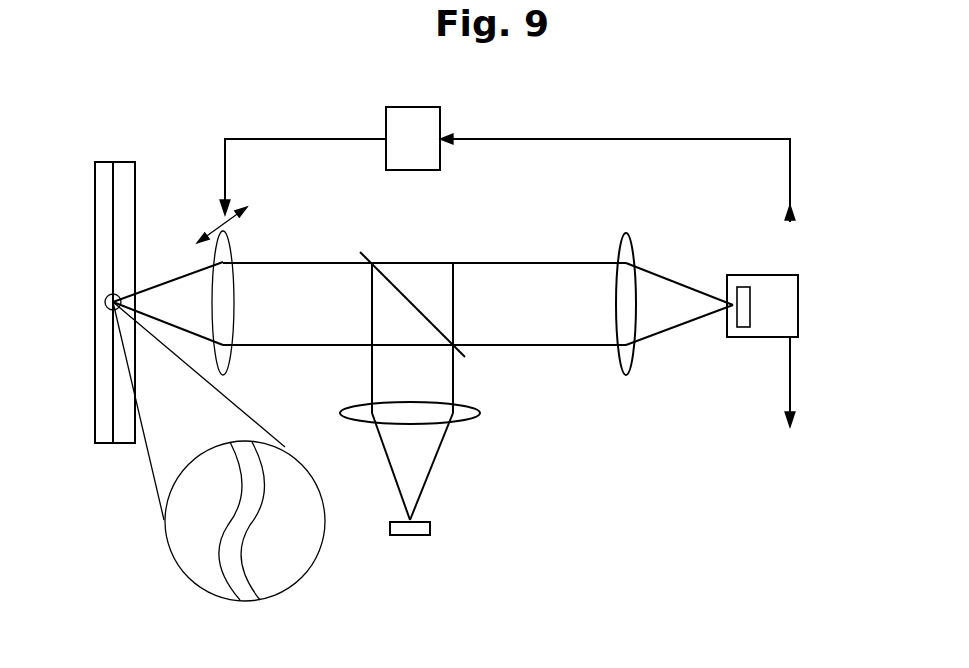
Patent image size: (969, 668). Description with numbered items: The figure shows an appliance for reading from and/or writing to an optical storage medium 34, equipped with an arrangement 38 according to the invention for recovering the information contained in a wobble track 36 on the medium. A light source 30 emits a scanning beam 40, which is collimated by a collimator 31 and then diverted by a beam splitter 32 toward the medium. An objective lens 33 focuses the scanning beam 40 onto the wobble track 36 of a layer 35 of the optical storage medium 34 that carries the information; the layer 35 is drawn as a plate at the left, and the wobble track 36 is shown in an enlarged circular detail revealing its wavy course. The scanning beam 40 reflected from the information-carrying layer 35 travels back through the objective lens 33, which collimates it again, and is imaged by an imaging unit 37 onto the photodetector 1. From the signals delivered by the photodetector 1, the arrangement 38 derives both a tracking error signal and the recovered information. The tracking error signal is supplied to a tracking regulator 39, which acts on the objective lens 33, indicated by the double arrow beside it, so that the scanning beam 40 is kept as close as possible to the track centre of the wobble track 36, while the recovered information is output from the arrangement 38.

The photodetector 1 is at (743, 283).
The light source 30 is at (438, 525).
The collimator 31 is at (490, 412).
The beam splitter 32 is at (408, 287).
The objective lens 33 is at (237, 250).
The optical storage medium 34 is at (118, 150).
The layer 35 is at (103, 443).
The wobble track 36 is at (253, 575).
The imaging unit 37 is at (630, 380).
The arrangement 38 is at (802, 295).
The tracking regulator 39 is at (448, 157).
The scanning beam 40 is at (295, 347).